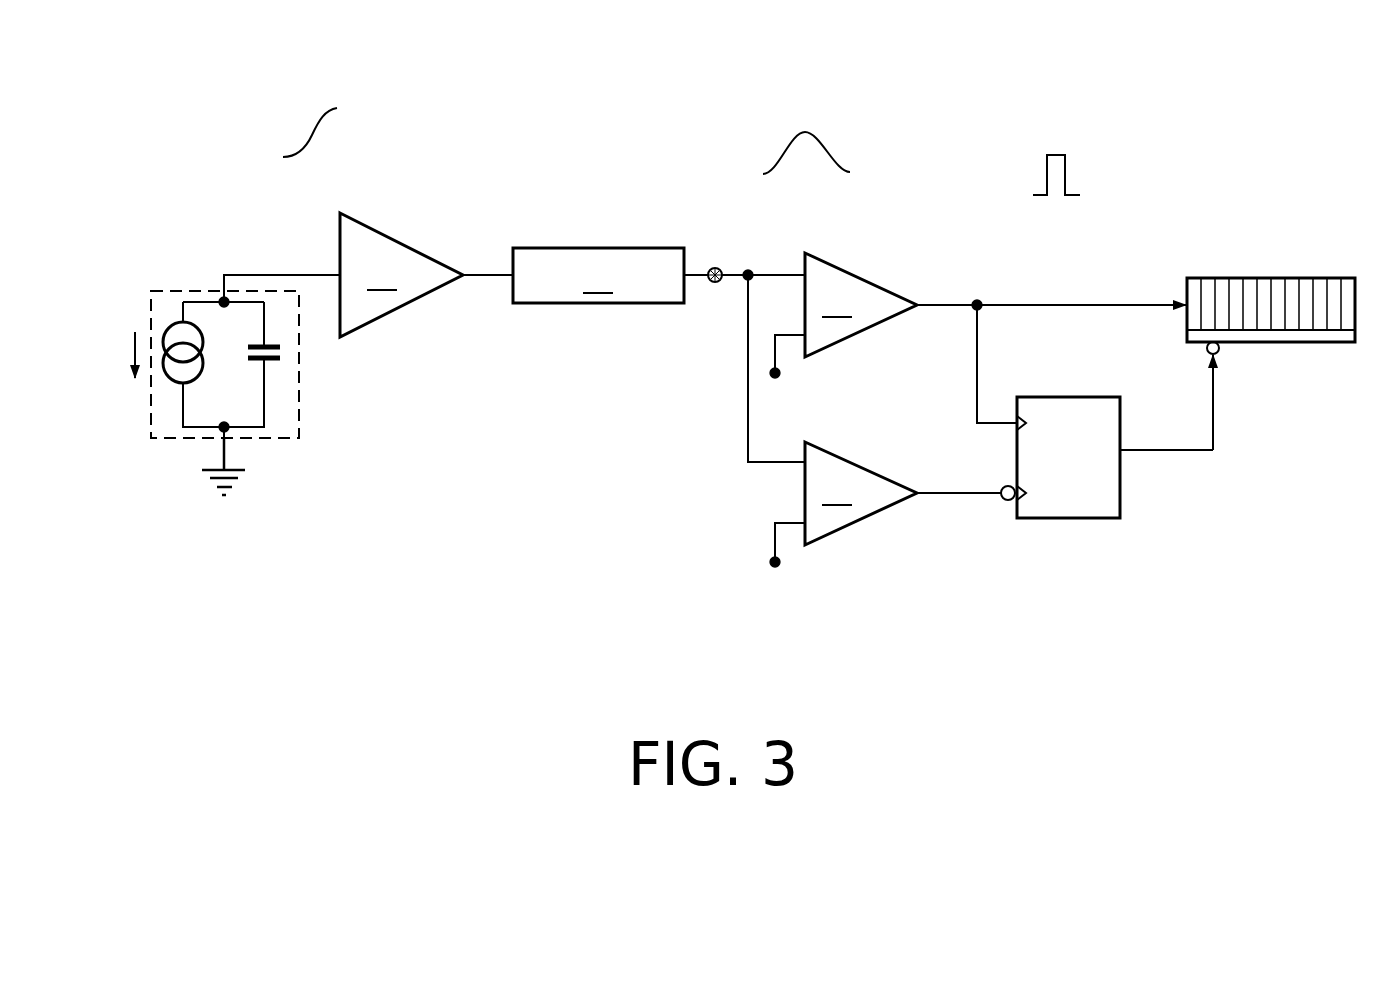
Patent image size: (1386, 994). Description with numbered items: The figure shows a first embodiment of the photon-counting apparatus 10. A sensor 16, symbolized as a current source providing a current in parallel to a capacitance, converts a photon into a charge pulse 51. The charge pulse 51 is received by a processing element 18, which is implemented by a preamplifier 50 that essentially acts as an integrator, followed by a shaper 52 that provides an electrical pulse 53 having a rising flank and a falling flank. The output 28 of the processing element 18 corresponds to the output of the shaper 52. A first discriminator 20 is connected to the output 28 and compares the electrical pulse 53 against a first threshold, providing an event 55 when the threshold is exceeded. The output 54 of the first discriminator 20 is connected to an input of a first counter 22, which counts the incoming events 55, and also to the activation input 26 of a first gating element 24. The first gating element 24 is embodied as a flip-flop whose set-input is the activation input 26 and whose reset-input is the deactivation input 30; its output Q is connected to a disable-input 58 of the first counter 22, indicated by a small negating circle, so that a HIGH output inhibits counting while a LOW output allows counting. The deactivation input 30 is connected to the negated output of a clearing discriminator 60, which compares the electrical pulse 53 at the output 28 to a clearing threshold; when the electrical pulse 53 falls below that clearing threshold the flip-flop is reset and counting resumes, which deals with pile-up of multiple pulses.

The apparatus 10 is at (277, 543).
The sensor 16 is at (211, 197).
The processing element 18 is at (490, 153).
The first discriminator 20 is at (838, 334).
The first counter 22 is at (1278, 277).
The first gating element 24 is at (1121, 505).
The activation input 26 is at (1017, 412).
The output of the processing element 28 is at (715, 268).
The deactivation input 30 is at (1017, 503).
The preamplifier 50 is at (401, 275).
The charge pulse 51 is at (276, 240).
The shaper 52 is at (610, 275).
The electrical pulse 53 is at (758, 260).
The output of the first discriminator 54 is at (977, 298).
The event 55 is at (1013, 280).
The disable-input 58 is at (1221, 350).
The clearing discriminator 60 is at (875, 523).